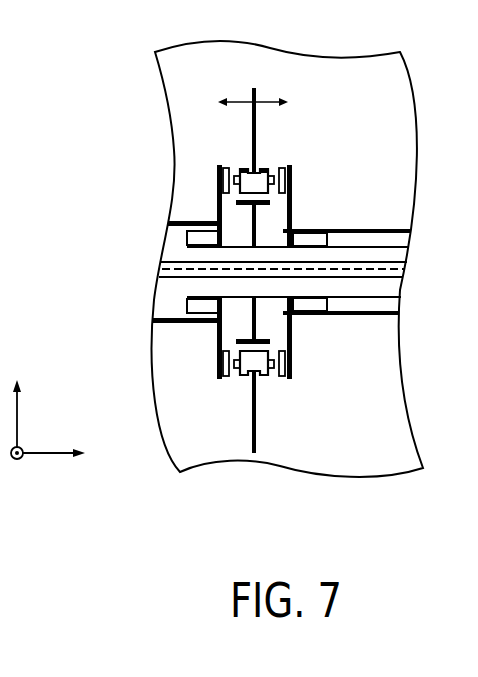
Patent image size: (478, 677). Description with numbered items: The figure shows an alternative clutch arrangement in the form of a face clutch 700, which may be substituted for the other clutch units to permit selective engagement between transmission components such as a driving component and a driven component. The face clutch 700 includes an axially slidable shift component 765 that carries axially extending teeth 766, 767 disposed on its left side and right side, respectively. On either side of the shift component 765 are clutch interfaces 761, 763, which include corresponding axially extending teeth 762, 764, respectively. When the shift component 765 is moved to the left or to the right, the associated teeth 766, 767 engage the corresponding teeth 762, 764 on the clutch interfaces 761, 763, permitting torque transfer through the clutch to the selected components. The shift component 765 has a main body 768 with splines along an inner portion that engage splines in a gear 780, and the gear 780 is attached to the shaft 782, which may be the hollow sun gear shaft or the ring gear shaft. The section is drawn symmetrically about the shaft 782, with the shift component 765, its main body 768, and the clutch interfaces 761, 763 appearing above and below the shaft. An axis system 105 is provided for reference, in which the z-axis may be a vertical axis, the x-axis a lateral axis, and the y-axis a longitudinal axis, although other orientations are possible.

The face clutch 700 is at (272, 64).
The axially slidable shift component 765 is at (227, 87).
The axially extending teeth 766 is at (238, 168).
The axially extending teeth 767 is at (270, 168).
The axially extending teeth 762 is at (227, 166).
The axially extending teeth 764 is at (283, 167).
The clutch interface 761 is at (217, 185).
The clutch interface 763 is at (292, 188).
The gear 780 is at (236, 200).
The main body 768 is at (265, 194).
The shaft 782 is at (218, 248).
The axis system 105 is at (92, 377).